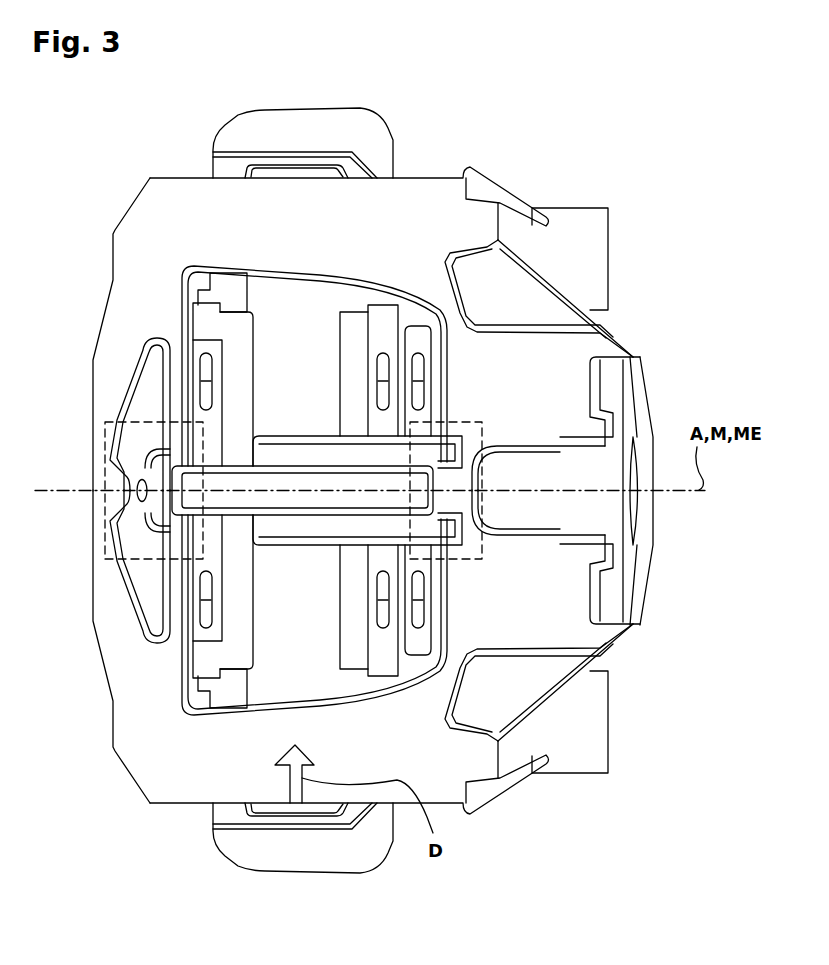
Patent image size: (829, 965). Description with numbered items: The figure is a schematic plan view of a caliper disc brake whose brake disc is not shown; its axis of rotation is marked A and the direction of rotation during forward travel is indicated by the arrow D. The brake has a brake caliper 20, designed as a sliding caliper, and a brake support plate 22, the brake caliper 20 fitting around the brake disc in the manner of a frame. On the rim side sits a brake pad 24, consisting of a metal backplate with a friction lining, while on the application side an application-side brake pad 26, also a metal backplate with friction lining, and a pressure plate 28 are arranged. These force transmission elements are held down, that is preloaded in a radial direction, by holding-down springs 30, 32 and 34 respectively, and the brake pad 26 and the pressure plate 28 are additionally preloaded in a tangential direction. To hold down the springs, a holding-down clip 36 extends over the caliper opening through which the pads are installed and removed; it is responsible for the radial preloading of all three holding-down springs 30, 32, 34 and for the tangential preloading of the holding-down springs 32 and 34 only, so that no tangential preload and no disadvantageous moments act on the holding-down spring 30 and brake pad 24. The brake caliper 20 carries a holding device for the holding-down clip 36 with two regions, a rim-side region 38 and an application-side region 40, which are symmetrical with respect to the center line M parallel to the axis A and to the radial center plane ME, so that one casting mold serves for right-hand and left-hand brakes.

The brake caliper 20 is at (143, 218).
The brake support plate 22 is at (392, 135).
The brake pad on the rim side 24 is at (203, 325).
The application-side brake pad 26 is at (360, 333).
The pressure plate 28 is at (430, 660).
The holding-down spring 30 is at (340, 567).
The holding-down spring 32 is at (180, 718).
The holding-down spring 34 is at (450, 580).
The holding-down clip 36 is at (284, 522).
The rim-side region 38 is at (115, 408).
The application-side region 40 is at (473, 413).